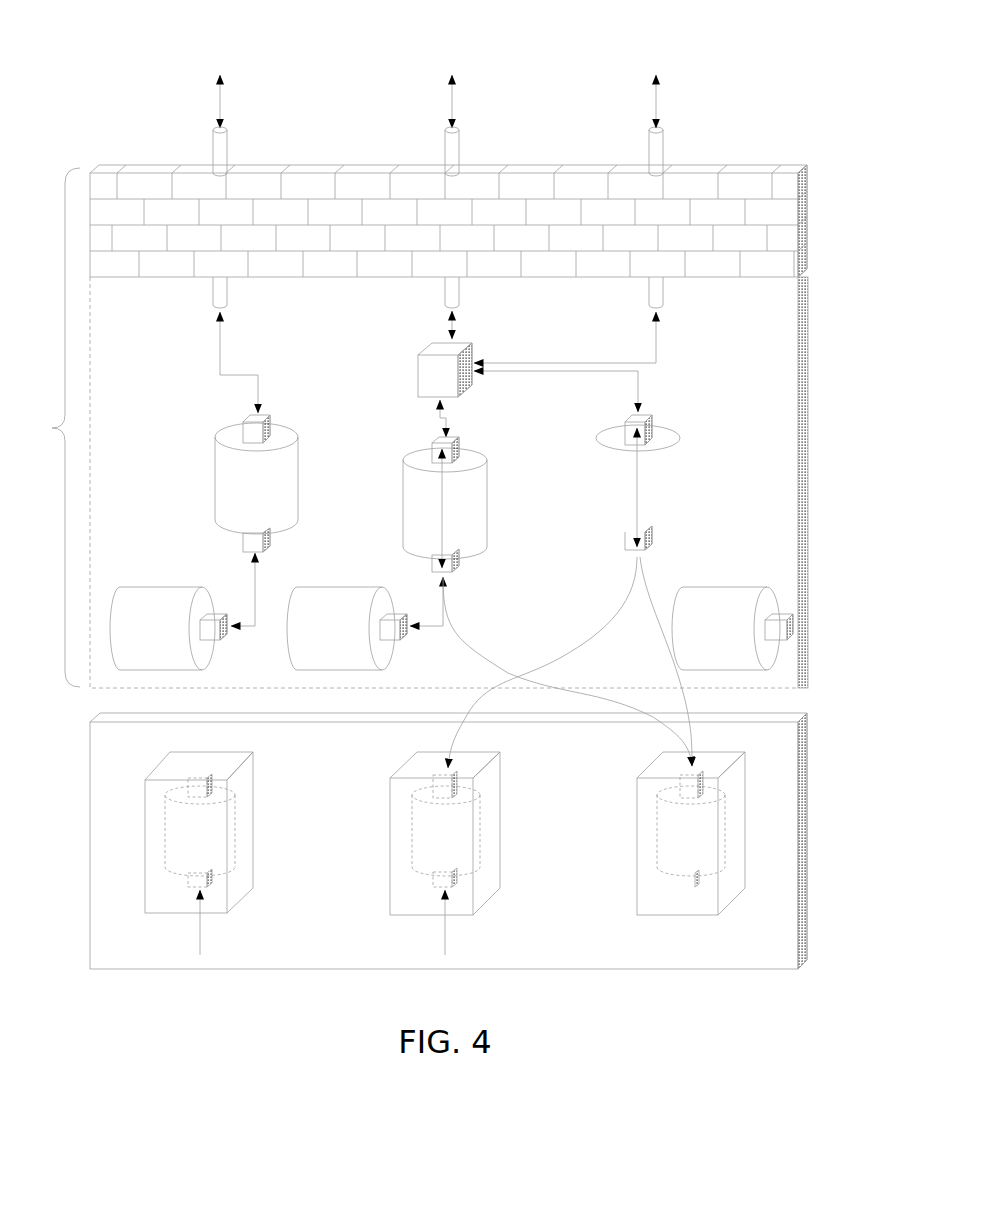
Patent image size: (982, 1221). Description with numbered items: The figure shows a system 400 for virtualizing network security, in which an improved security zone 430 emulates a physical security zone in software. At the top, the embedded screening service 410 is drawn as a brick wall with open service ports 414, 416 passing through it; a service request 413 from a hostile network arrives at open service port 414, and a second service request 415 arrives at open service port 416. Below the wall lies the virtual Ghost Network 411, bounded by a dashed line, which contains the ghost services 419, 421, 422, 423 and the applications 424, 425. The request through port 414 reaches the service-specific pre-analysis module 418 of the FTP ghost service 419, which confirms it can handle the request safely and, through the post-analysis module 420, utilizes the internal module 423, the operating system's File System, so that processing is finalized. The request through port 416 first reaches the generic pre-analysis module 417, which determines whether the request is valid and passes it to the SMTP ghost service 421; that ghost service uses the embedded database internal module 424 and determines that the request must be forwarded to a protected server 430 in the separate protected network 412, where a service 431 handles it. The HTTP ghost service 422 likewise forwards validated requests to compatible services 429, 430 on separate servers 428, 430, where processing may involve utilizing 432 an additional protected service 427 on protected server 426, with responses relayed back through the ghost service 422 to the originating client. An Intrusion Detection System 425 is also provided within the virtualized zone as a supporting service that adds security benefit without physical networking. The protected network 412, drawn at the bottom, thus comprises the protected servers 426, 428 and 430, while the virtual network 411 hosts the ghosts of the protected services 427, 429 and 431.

The system for virtualizing network security 400 is at (129, 129).
The embedded screening service 410 is at (808, 220).
The virtual Ghost Network 411 is at (808, 475).
The protected network 412 is at (808, 843).
The service request 413 is at (224, 103).
The open service port 414 is at (229, 152).
The service request 415 is at (457, 103).
The open service port 416 is at (461, 152).
The pre-analysis module 417 is at (413, 378).
The pre-analysis module 418 is at (272, 420).
The ghost service 419 is at (298, 490).
The post-analysis module 420 is at (271, 544).
The ghost service 421 is at (489, 504).
The ghost service 422 is at (679, 483).
The internal module 423 is at (161, 587).
The internal module 424 is at (351, 587).
The Intrusion Detection System 425 is at (729, 587).
The protected server 426 is at (210, 853).
The protected service 427 is at (163, 835).
The server 428 is at (454, 853).
The compatible service 429 is at (410, 835).
The protected server 430 is at (404, 541).
The service 431 is at (656, 840).
The utilizing 432 is at (323, 955).